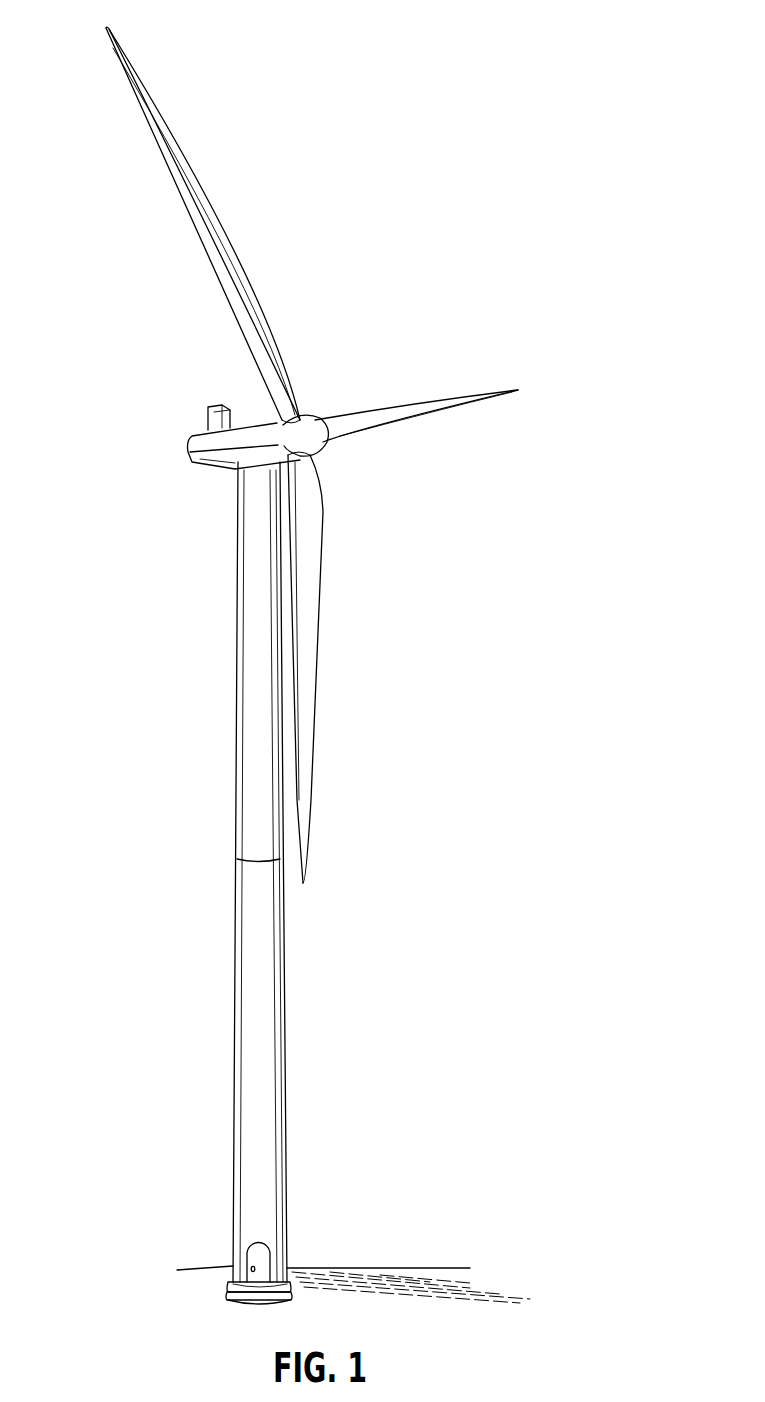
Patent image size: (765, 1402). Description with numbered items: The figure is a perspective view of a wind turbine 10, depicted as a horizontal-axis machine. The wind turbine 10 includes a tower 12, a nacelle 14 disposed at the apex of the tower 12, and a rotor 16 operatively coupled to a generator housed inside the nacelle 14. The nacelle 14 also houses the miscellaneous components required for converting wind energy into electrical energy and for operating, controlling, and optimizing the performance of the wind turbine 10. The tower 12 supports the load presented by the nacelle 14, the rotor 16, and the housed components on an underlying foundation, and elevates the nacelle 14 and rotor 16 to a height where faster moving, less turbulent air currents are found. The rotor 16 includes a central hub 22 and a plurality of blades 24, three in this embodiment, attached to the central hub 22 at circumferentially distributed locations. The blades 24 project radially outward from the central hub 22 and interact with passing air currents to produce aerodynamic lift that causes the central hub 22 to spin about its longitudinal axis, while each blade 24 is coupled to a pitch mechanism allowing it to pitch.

The wind turbine 10 is at (318, 665).
The tower 12 is at (238, 728).
The nacelle 14 is at (194, 432).
The rotor 16 is at (312, 455).
The central hub 22 is at (312, 420).
The blades 24 is at (147, 122).